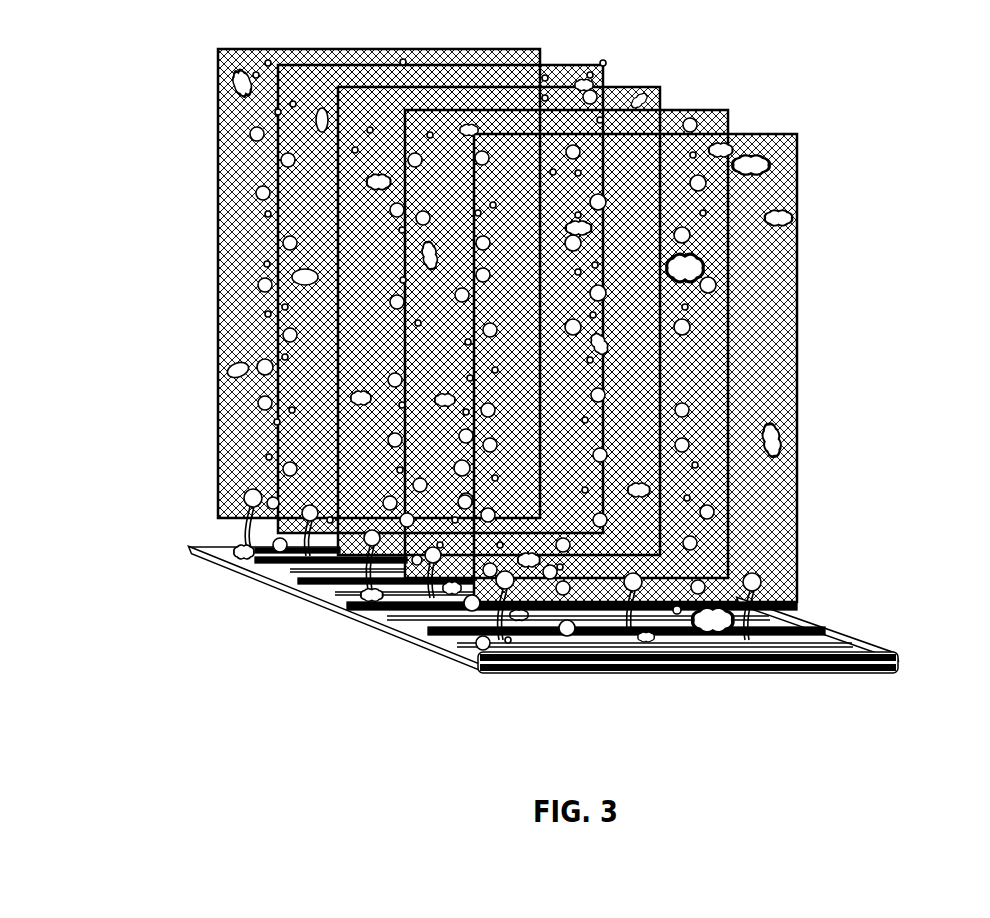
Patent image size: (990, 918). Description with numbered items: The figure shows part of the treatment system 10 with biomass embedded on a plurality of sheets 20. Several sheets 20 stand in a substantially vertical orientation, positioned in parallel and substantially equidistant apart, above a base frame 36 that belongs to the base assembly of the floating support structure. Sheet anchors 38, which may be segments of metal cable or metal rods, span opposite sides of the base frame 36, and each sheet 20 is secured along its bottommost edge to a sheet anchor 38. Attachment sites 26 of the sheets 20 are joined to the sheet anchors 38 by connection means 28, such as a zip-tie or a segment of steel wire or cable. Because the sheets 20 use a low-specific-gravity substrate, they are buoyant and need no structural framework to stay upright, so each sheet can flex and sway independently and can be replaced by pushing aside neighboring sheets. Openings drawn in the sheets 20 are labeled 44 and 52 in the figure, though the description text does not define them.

The treatment system 10 is at (536, 394).
The sheet 20 is at (502, 325).
The attachment site 26 is at (237, 468).
The connection means 28 is at (242, 531).
The base frame 36 is at (893, 650).
The sheet anchor 38 is at (678, 635).
The circular apertures 44 is at (698, 468).
The irregular openings 52 is at (693, 268).